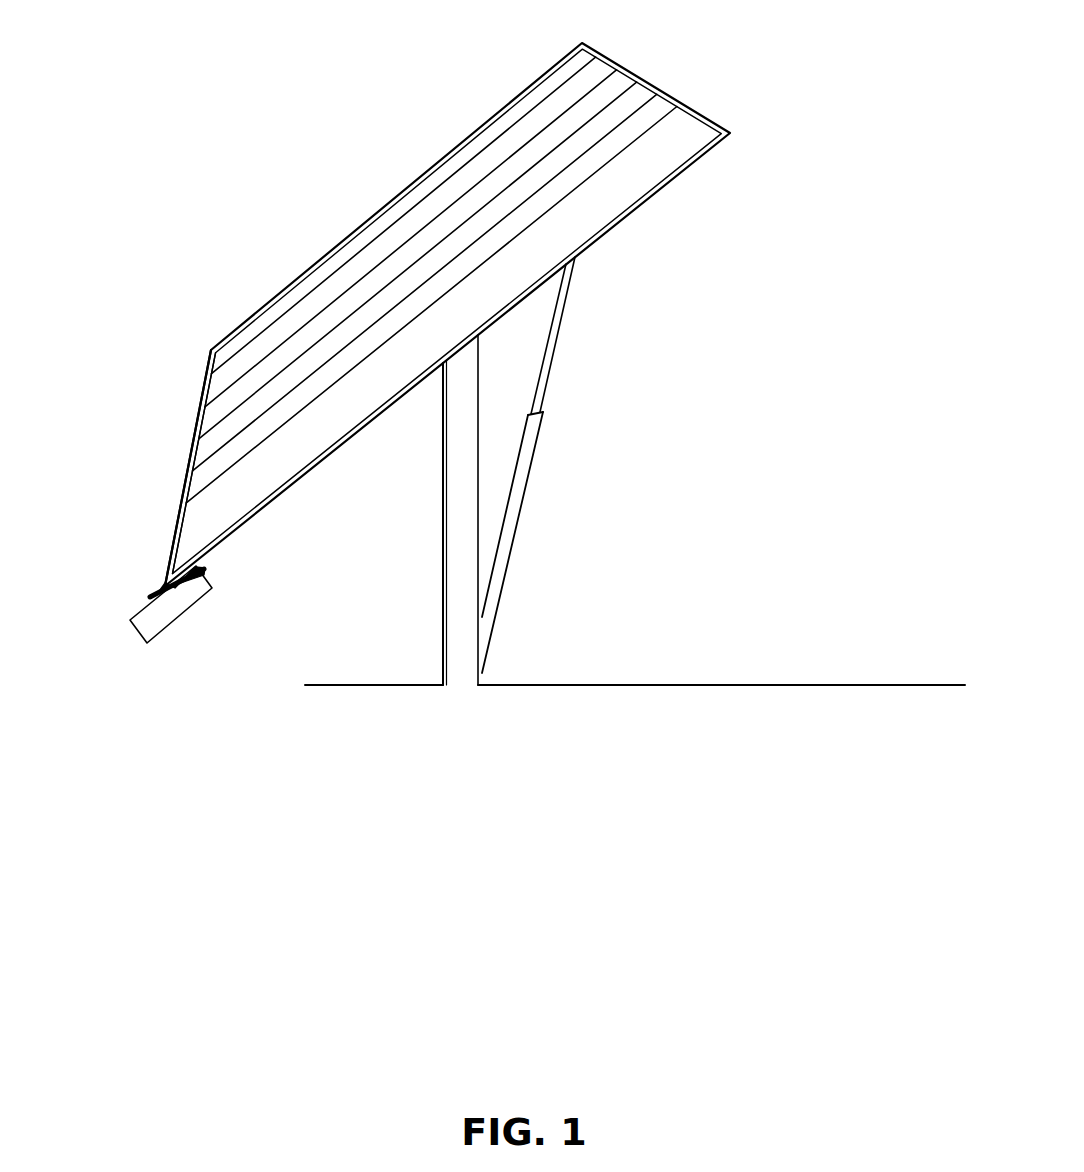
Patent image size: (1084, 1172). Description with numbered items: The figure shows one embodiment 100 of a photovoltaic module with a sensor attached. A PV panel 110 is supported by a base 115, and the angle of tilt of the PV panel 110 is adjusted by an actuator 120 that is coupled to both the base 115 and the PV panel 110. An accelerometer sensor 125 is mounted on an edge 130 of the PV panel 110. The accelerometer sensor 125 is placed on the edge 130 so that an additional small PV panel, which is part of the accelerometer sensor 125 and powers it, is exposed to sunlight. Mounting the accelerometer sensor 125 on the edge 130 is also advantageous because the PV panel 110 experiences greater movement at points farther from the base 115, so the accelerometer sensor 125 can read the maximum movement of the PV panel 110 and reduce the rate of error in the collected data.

The embodiment 100 is at (293, 92).
The PV panel 110 is at (641, 87).
The base 115 is at (447, 563).
The actuator 120 is at (530, 466).
The accelerometer sensor 125 is at (143, 603).
The edge 130 is at (196, 431).